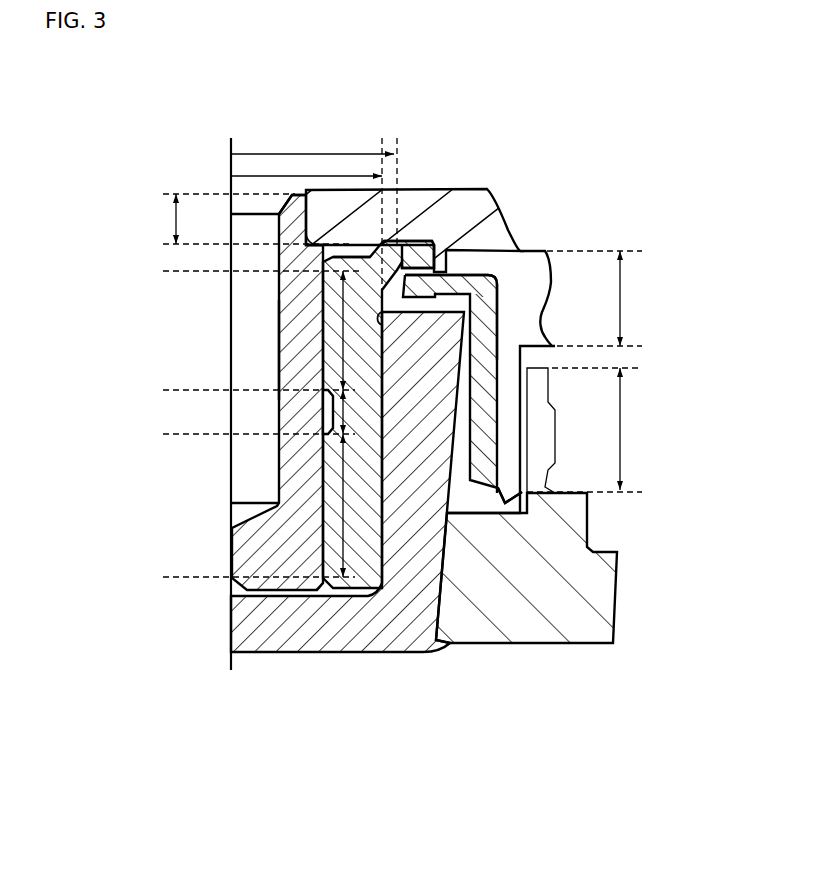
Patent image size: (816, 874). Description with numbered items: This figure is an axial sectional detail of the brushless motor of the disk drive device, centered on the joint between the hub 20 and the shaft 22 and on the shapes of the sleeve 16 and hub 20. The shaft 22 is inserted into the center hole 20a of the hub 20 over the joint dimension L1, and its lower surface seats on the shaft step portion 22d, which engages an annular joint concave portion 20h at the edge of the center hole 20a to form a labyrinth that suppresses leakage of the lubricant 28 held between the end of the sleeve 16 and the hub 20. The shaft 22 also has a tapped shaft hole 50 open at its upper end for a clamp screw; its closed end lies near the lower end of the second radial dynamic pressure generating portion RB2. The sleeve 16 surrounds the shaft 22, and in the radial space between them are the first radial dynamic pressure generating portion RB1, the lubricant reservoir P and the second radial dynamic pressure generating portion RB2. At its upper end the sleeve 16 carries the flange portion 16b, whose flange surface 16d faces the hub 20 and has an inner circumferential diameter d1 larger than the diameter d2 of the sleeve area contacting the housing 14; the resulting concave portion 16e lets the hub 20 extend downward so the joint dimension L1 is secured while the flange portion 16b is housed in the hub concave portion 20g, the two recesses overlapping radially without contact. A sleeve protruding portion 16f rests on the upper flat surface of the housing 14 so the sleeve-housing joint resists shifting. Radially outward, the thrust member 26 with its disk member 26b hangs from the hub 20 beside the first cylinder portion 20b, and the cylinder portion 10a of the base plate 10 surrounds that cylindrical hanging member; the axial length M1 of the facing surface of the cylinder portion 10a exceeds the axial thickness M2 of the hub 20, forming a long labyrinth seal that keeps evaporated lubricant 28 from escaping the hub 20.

The base plate 10 is at (565, 633).
The cylinder portion 10a is at (542, 410).
The housing 14 is at (400, 643).
The sleeve 16 is at (363, 575).
The flange portion 16b is at (463, 272).
The flange surface 16d is at (440, 247).
The concave portion 16e is at (332, 258).
The sleeve protruding portion 16f is at (498, 293).
The hub 20 is at (450, 200).
The center hole 20a is at (287, 207).
The first cylinder portion 20b is at (532, 478).
The hub concave portion 20g is at (413, 252).
The joint concave portion 20h is at (327, 242).
The shaft 22 is at (250, 543).
The shaft step portion 22d is at (322, 240).
The thrust member 26 is at (490, 375).
The disk member 26b is at (490, 355).
The lubricant 28 is at (513, 462).
The shaft hole 50 is at (278, 348).
The lubricant reservoir P is at (332, 408).
The first radial dynamic pressure generating portion RB1 is at (323, 313).
The second radial dynamic pressure generating portion RB2 is at (323, 522).
The joint dimension L1 is at (172, 220).
The axial length of the facing surface M1 is at (622, 428).
The axial thickness of the hub M2 is at (622, 300).
The inner circumferential diameter of the flange surface d1 is at (347, 150).
The diameter of the housing-contact area d2 is at (275, 170).